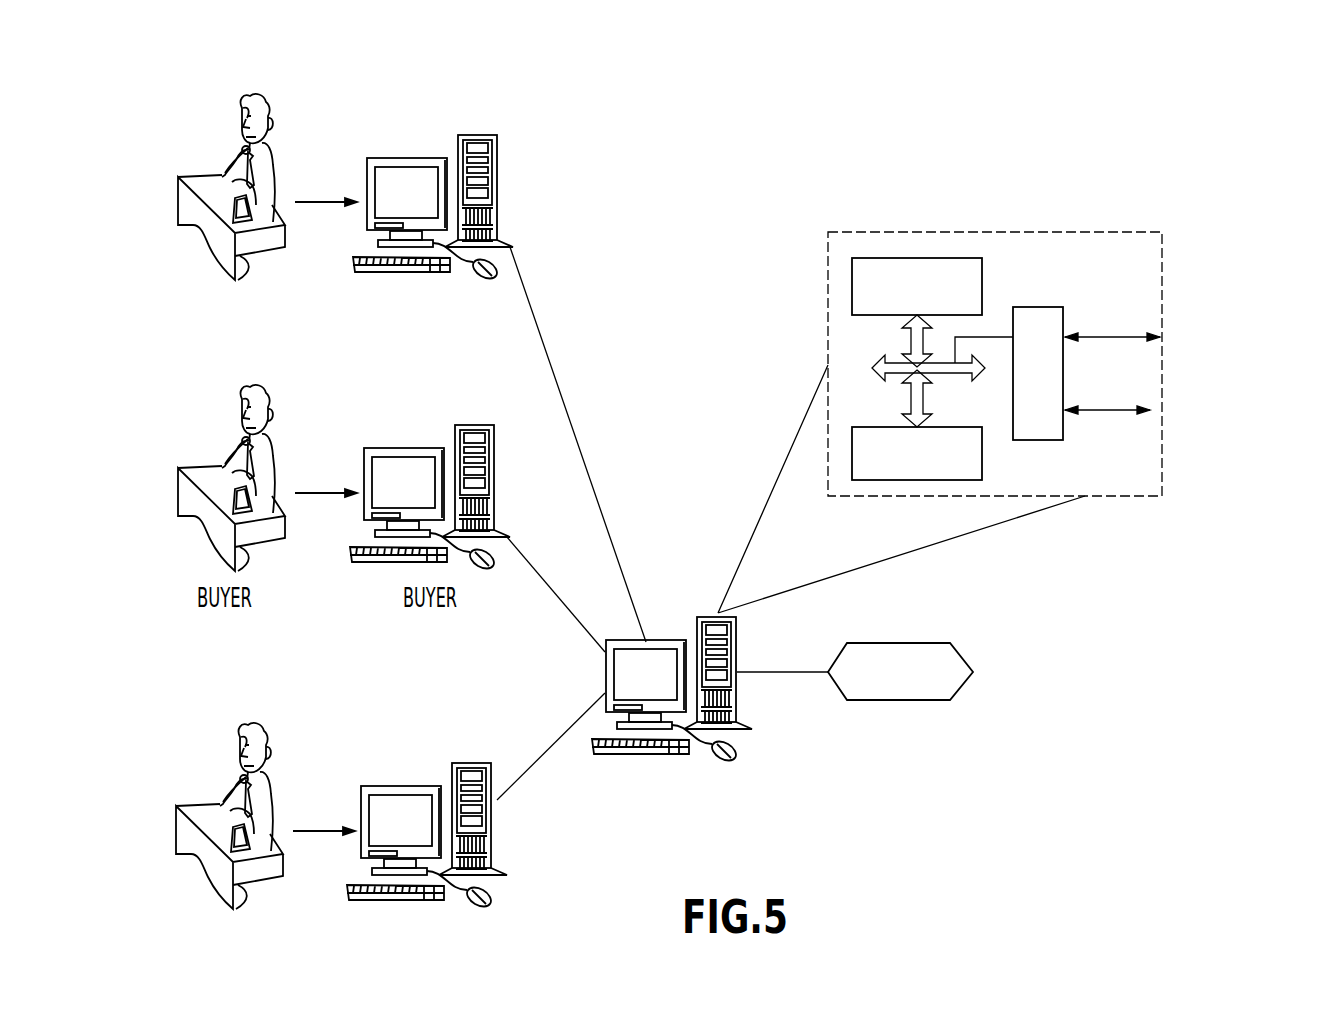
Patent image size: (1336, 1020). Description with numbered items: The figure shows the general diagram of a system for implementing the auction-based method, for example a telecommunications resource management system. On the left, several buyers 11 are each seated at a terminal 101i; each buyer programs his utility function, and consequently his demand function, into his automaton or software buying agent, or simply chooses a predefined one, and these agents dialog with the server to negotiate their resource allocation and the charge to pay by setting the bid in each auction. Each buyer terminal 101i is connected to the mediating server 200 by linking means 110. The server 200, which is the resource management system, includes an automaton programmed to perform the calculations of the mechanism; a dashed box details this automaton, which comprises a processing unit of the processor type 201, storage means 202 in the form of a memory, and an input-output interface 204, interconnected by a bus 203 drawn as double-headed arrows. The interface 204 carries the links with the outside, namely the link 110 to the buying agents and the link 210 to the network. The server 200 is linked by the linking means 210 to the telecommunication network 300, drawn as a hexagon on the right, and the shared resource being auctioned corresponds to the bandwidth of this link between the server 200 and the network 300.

The buyer 11 is at (266, 93).
The buyer terminal 101i is at (498, 168).
The linking means 110 is at (565, 398).
The server 200 is at (660, 642).
The processing unit of the processor type 201 is at (982, 282).
The storage means 202 is at (908, 482).
The bus 203 is at (943, 377).
The input-output interface 204 is at (1065, 383).
The linking means 210 is at (782, 673).
The telecommunication network 300 is at (892, 643).